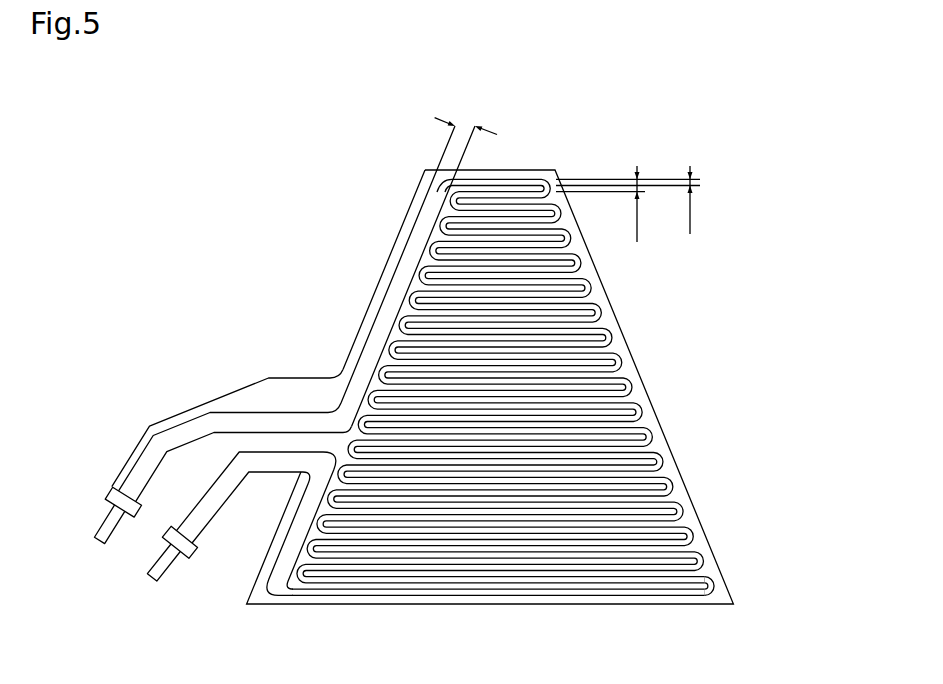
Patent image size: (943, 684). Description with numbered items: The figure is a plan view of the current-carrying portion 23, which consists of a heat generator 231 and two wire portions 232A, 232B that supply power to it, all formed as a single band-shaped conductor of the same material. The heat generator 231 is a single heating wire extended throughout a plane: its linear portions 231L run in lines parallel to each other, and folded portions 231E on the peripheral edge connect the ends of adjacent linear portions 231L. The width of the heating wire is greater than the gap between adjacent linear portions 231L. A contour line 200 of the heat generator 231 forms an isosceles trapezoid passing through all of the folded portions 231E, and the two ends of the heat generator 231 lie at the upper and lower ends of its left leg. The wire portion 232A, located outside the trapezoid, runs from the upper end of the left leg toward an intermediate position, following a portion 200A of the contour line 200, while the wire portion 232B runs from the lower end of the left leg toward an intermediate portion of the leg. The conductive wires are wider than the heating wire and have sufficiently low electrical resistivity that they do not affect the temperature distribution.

The current-carrying portion 23 is at (309, 156).
The contour line 200 is at (605, 598).
The portion of the contour line 200A is at (410, 297).
The heat generator 231 is at (517, 179).
The linear portions 231L is at (471, 600).
The folded portions 231E is at (712, 582).
The wire portion 232A is at (262, 412).
The wire portion 232B is at (250, 453).